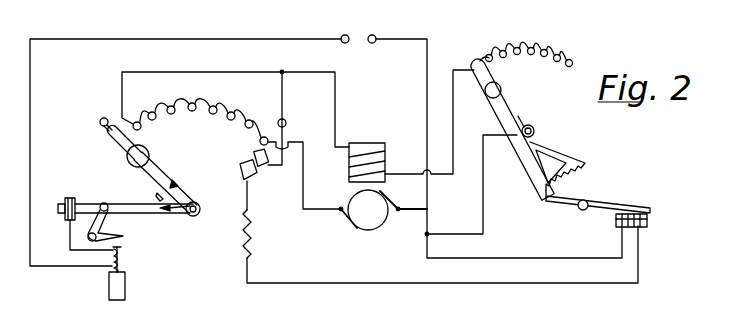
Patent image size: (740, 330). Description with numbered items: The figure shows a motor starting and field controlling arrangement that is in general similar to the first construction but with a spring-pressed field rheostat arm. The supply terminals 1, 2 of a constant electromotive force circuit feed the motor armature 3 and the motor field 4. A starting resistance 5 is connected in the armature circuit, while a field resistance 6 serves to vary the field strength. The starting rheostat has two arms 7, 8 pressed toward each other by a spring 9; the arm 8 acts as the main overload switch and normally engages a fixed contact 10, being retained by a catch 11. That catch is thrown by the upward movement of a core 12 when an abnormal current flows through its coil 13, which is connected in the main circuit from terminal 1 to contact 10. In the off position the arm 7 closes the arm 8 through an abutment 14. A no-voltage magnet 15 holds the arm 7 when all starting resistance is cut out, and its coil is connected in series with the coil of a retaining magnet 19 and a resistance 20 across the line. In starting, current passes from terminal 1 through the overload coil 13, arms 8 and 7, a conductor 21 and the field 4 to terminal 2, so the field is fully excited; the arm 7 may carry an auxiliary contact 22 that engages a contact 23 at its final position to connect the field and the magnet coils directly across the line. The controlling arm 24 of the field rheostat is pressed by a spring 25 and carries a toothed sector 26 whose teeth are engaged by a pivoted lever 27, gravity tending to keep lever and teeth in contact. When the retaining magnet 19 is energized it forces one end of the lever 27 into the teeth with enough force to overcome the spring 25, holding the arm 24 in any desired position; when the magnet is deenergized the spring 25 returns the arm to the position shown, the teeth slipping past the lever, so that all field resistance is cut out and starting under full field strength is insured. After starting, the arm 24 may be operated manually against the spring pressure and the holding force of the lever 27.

The supply terminal 1 is at (342, 29).
The supply terminal 2 is at (375, 29).
The motor armature 3 is at (383, 210).
The motor field 4 is at (367, 152).
The starting resistance 5 is at (200, 122).
The field resistance 6 is at (526, 43).
The starting rheostat arm 7 is at (165, 180).
The main overload switch arm 8 is at (112, 206).
The spring 9 is at (183, 214).
The fixed contact 10 is at (67, 199).
The catch 11 is at (100, 226).
The core 12 is at (125, 290).
The overload coil 13 is at (121, 258).
The abutment 14 is at (157, 195).
The no-voltage magnet 15 is at (256, 178).
The retaining magnet 19 is at (642, 230).
The resistance 20 is at (257, 234).
The conductor 21 is at (215, 72).
The auxiliary contact 22 is at (100, 126).
The contact 23 is at (285, 120).
The controlling arm of the field rheostat 24 is at (512, 100).
The spring 25 is at (534, 126).
The toothed sector 26 is at (580, 180).
The pivoted lever 27 is at (598, 216).